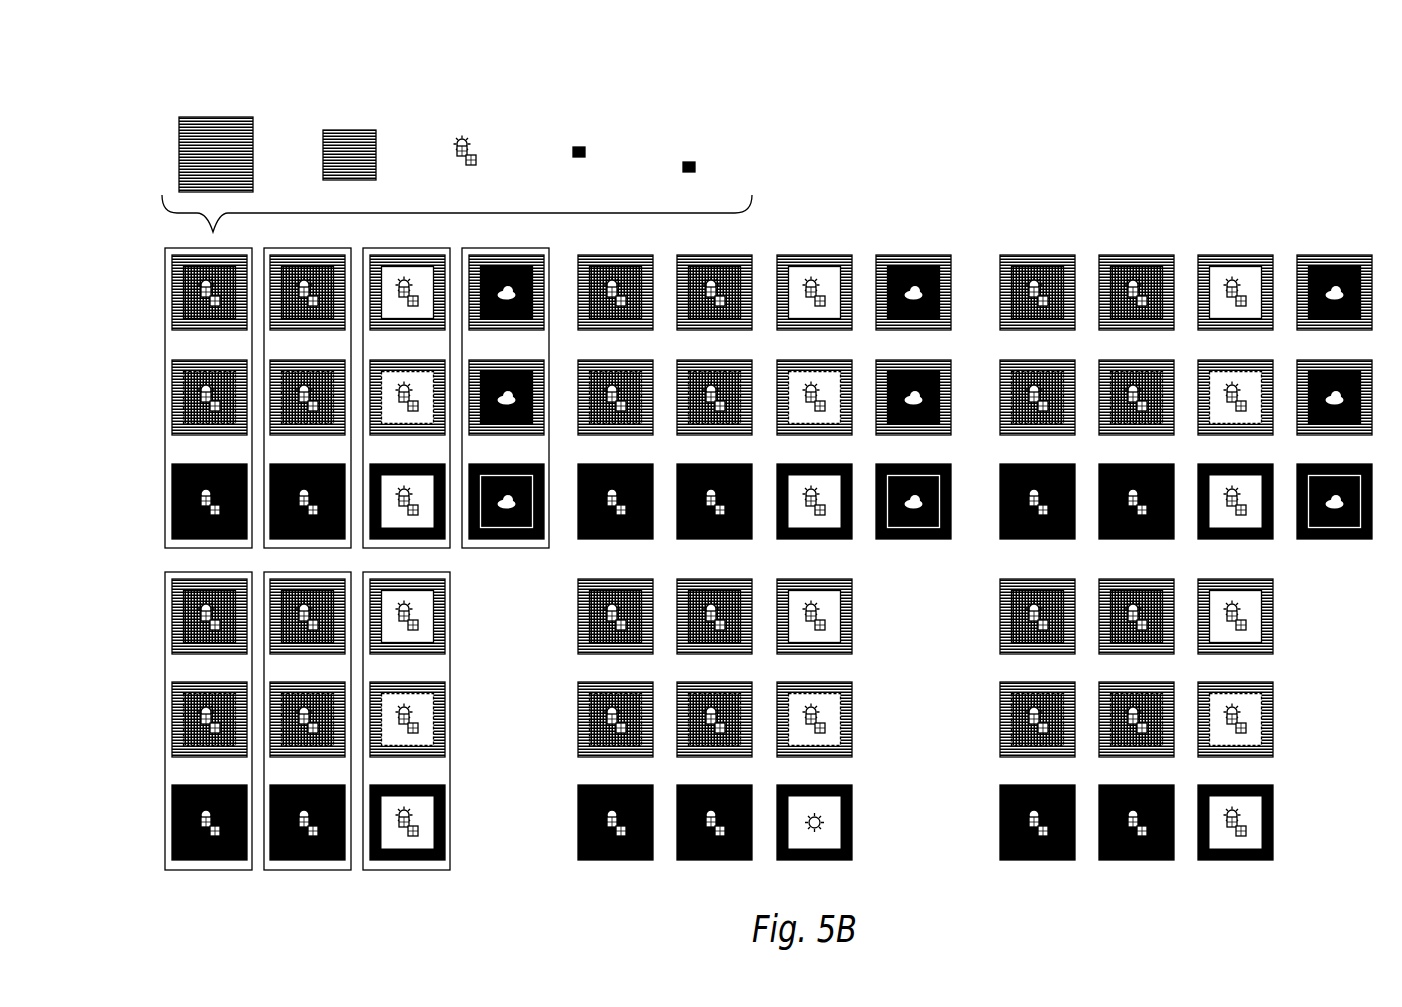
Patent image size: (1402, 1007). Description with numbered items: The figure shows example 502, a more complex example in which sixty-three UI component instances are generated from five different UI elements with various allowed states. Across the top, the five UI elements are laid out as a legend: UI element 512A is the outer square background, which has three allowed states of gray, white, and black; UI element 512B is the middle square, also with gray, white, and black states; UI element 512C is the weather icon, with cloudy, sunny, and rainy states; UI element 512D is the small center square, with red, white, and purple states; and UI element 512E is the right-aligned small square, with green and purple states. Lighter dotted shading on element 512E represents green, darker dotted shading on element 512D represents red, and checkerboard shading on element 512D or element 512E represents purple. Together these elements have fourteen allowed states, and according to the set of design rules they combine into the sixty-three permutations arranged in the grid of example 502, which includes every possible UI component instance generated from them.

The example 502 is at (1248, 108).
The UI element (outer square background) 512A is at (195, 117).
The UI element (middle square) 512B is at (363, 130).
The UI element (weather icon) 512C is at (465, 137).
The UI element (small center square) 512D is at (578, 147).
The UI element (right-aligned small square) 512E is at (688, 160).